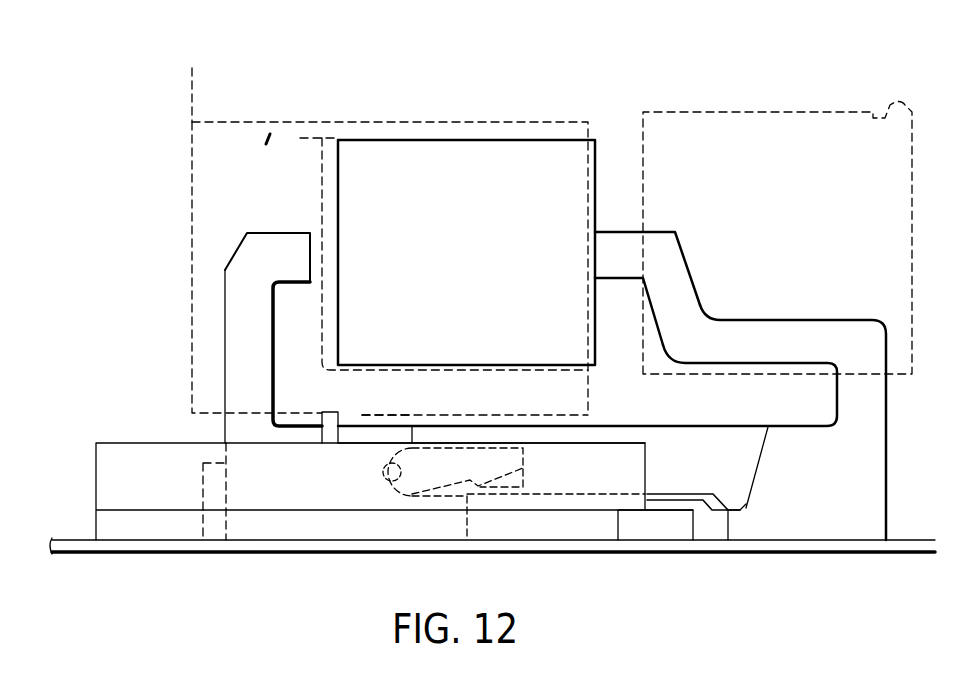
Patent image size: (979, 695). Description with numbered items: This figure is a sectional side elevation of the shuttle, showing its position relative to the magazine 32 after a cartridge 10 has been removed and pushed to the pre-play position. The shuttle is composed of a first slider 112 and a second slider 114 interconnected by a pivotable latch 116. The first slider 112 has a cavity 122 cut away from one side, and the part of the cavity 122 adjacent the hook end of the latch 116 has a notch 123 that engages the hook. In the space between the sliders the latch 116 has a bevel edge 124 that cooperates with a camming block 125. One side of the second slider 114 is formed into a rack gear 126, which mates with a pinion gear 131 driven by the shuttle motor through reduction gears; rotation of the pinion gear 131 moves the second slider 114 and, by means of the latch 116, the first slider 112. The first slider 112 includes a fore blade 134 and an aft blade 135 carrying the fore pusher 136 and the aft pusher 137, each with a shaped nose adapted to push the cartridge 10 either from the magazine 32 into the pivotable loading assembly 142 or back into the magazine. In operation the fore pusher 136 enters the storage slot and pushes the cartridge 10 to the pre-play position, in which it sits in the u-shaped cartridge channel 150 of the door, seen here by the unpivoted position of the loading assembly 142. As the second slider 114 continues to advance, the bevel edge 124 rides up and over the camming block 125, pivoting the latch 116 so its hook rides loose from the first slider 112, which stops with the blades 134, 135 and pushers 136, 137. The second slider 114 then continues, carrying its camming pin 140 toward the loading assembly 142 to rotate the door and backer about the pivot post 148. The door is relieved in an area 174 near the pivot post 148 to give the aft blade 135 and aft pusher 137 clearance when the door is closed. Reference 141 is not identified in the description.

The cartridge 10 is at (440, 150).
The magazine 32 is at (795, 108).
The first slider 112 is at (785, 436).
The second slider 114 is at (144, 455).
The pivotable latch 116 is at (452, 458).
The cavity 122 is at (757, 455).
The notch 123 is at (748, 507).
The bevel edge 124 is at (523, 466).
The camming block 125 is at (677, 496).
The rack gear 126 is at (352, 549).
The pinion gear 131 is at (655, 528).
The fore blade 134 is at (870, 445).
The aft blade 135 is at (240, 333).
The fore pusher 136 is at (620, 240).
The aft pusher 137 is at (248, 252).
The camming pin 140 is at (326, 412).
The dashed line 141 is at (377, 415).
The pivotable loading assembly 142 is at (190, 180).
The pivot post 148 is at (190, 85).
The u-shaped cartridge channel 150 is at (298, 140).
The relieved area 174 is at (268, 142).